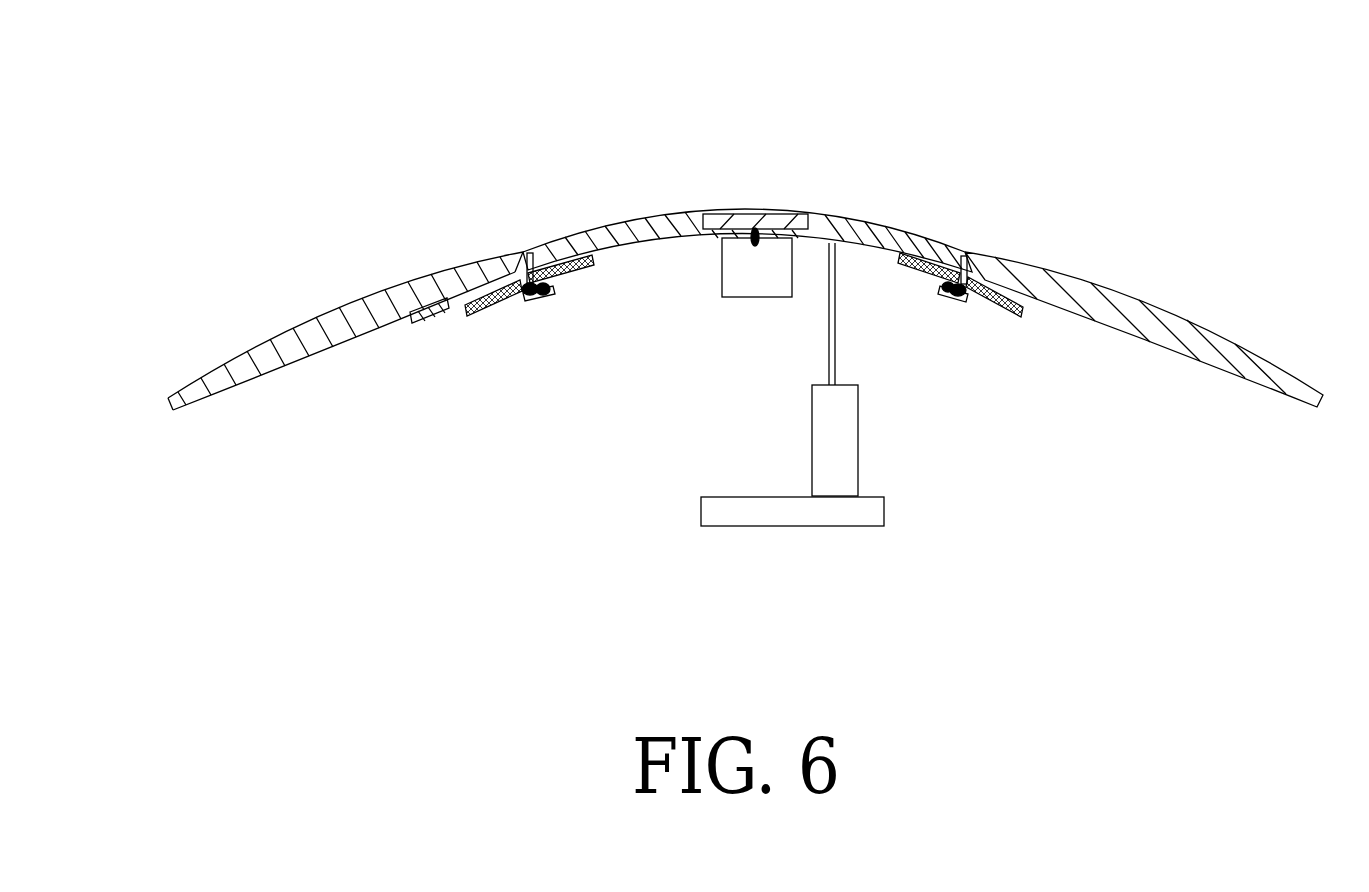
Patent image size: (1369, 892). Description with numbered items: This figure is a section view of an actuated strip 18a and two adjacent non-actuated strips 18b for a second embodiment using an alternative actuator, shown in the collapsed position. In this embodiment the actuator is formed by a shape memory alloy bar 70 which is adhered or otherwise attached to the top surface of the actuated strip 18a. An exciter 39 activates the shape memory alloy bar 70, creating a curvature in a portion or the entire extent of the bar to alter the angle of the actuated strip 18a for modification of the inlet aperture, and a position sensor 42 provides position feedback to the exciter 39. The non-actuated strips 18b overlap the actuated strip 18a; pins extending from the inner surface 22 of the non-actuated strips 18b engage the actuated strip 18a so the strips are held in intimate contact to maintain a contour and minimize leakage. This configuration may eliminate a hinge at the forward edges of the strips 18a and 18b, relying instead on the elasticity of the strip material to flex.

The actuated strip 18a is at (630, 218).
The non-actuated strip 18b is at (282, 328).
The inner surface 22 is at (357, 335).
The exciter 39 is at (770, 267).
The position sensor 42 is at (847, 405).
The shape memory alloy bar 70 is at (755, 217).